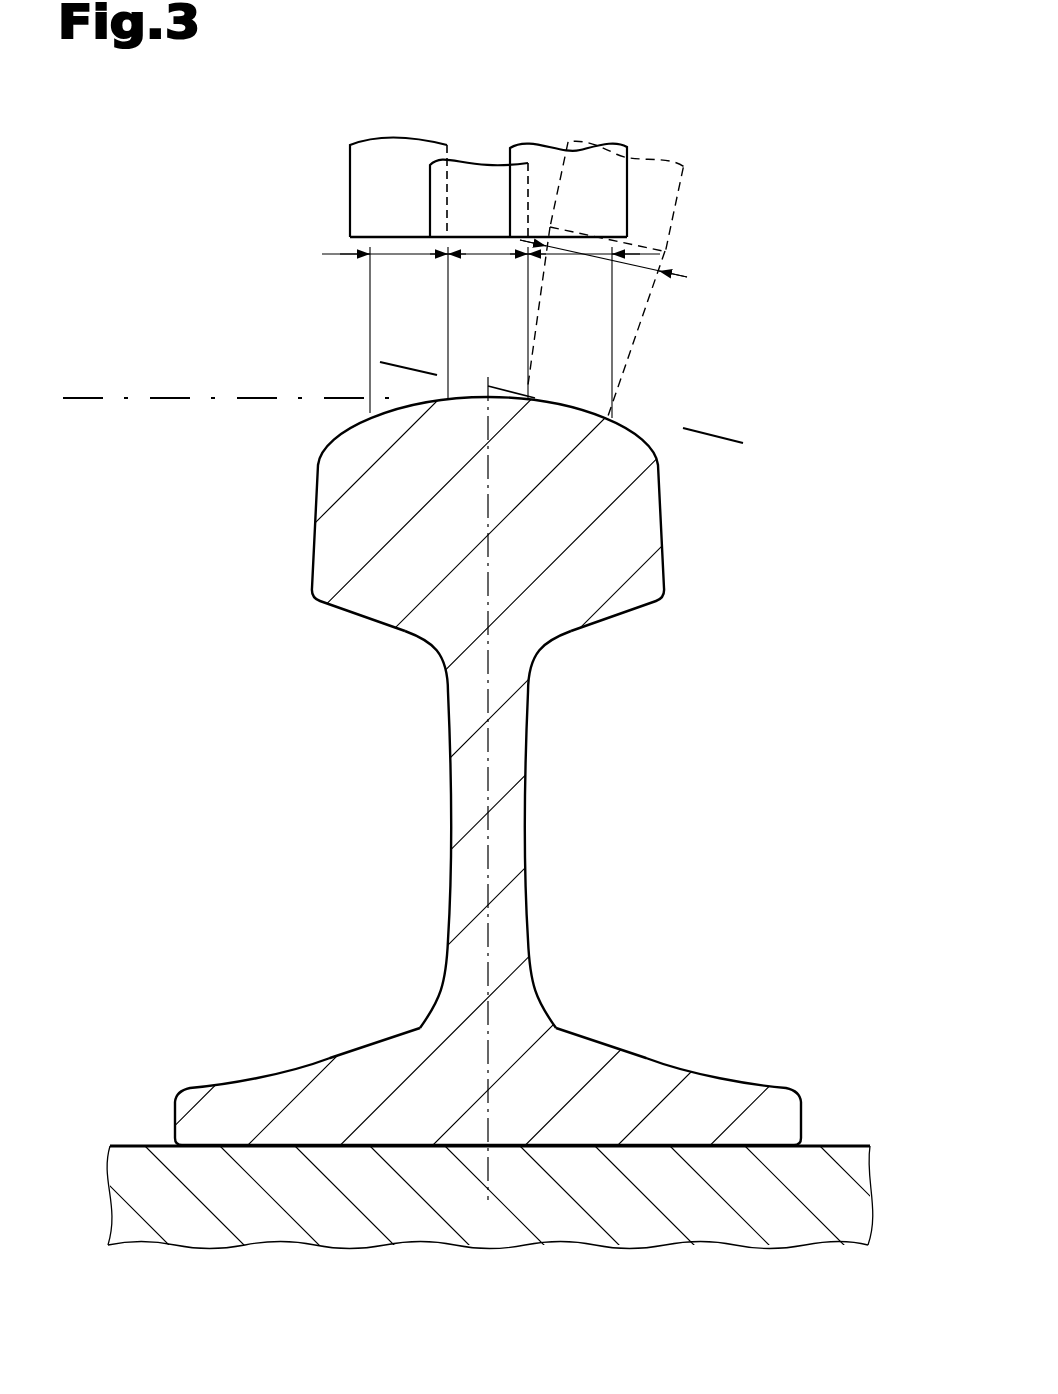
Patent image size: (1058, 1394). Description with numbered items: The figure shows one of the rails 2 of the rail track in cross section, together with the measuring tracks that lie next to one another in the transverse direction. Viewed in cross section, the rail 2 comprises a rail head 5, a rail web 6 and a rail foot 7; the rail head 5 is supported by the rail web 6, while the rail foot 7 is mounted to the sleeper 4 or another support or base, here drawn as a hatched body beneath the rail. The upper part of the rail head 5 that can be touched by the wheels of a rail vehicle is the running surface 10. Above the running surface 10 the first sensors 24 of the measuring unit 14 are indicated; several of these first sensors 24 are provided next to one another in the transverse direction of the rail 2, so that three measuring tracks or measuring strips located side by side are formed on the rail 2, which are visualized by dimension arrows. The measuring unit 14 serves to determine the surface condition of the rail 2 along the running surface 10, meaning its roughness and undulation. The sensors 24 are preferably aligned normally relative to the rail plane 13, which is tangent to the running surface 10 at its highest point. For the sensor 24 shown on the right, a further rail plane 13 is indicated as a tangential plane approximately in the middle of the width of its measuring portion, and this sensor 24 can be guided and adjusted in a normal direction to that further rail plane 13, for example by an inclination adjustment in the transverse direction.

The rail 2 is at (692, 302).
The sleeper 4 is at (838, 1143).
The rail head 5 is at (737, 507).
The rail web 6 is at (582, 770).
The rail foot 7 is at (678, 1018).
The running surface 10 is at (500, 392).
The rail plane 13 is at (175, 397).
The measuring unit 14 is at (644, 113).
The first sensor 24 is at (388, 160).